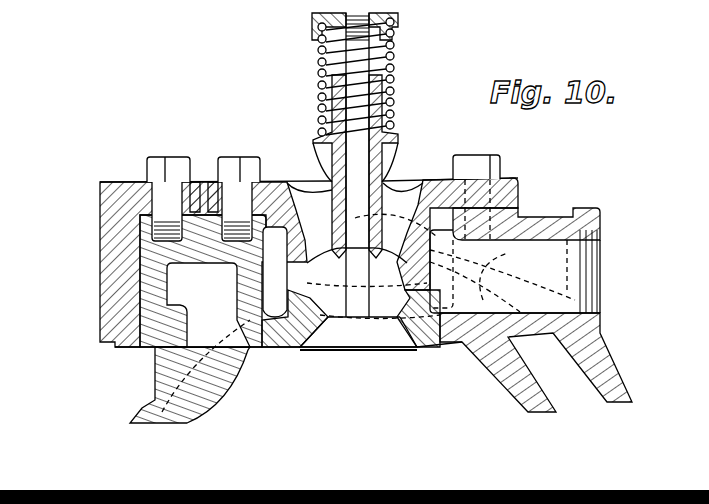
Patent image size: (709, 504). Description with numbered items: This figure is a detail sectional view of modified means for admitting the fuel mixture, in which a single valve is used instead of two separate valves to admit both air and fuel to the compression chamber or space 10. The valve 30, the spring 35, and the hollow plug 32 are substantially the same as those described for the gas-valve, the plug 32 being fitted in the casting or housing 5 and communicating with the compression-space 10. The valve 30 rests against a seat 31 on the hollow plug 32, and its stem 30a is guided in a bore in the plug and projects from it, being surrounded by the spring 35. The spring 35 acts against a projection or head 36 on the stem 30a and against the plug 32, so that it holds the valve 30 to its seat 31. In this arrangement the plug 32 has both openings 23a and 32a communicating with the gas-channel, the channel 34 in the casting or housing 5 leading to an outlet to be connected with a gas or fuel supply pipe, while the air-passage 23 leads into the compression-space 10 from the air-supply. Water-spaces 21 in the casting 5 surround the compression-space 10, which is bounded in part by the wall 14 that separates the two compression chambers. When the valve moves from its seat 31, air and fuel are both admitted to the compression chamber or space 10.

The projection or head 36 is at (398, 20).
The spring 35 is at (392, 62).
The hollow plug 32 is at (440, 180).
The casting or housing 5 is at (537, 218).
The air-passage 23 is at (515, 271).
The channel 34 is at (275, 272).
The water-spaces 21 is at (208, 305).
The stem 30a is at (357, 178).
The valve 30 is at (358, 181).
The opening 32a is at (292, 350).
The opening 23a is at (393, 345).
The seat 31 is at (413, 347).
The compression chamber or space 10 is at (358, 378).
The wall 14 is at (221, 377).